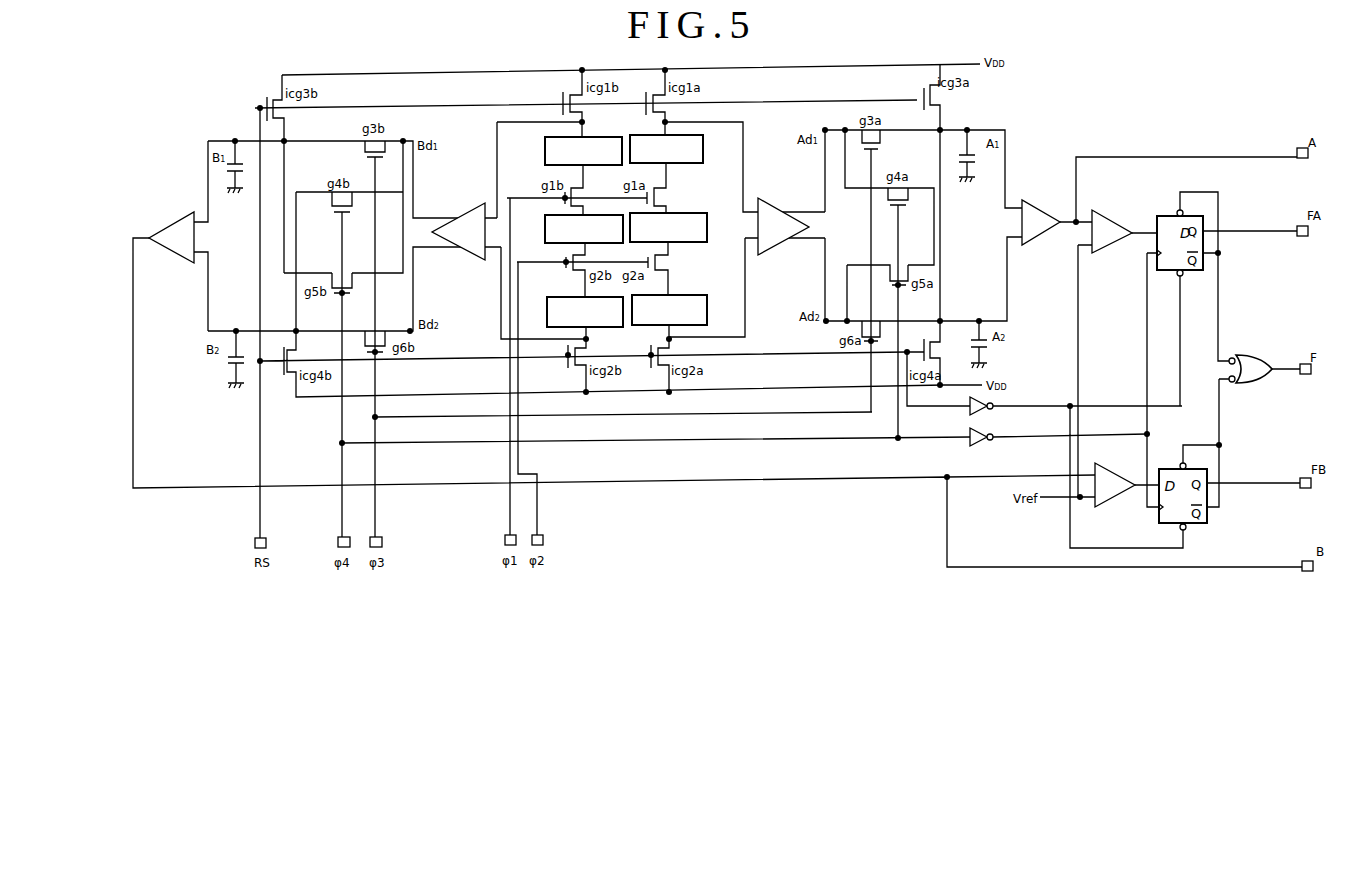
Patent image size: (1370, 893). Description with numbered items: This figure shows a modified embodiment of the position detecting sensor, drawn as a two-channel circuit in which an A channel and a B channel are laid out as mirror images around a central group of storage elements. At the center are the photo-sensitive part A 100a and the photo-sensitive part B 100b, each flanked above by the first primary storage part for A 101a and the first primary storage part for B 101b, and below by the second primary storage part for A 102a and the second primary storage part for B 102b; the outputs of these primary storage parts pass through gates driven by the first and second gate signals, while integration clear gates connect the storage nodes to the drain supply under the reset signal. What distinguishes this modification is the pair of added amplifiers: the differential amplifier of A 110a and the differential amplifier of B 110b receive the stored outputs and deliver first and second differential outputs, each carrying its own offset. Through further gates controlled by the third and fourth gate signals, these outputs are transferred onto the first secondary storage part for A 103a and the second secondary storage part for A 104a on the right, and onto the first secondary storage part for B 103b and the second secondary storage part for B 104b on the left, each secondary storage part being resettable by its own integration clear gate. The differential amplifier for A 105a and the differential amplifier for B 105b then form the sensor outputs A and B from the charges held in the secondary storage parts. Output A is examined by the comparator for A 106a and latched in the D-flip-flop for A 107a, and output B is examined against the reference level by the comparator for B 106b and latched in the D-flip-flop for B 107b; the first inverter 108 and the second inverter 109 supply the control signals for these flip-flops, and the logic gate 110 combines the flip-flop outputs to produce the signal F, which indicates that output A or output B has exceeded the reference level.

The differential amplifier for B 105b is at (179, 215).
The first secondary storage part for B 103b is at (243, 167).
The second secondary storage part for B 104b is at (225, 367).
The differential amplifier of B 110b is at (461, 211).
The first primary storage part for B 101b is at (543, 148).
The photo-sensitive part B 100b is at (545, 231).
The second primary storage part for B 102b is at (547, 314).
The first primary storage part for A 101a is at (709, 147).
The photo-sensitive part A 100a is at (710, 230).
The second primary storage part for A 102a is at (710, 313).
The differential amplifier of A 110a is at (778, 198).
The first secondary storage part for A 103a is at (962, 160).
The second secondary storage part for A 104a is at (993, 346).
The differential amplifier for A 105a is at (1042, 206).
The comparator for A 106a is at (1112, 217).
The D-flip-flop for A 107a is at (1161, 216).
The first inverter 108 is at (990, 417).
The second inverter 109 is at (974, 447).
The comparator for B 106b is at (1111, 507).
The D-flip-flop for B 107b is at (1168, 469).
The logic gate 110 is at (1249, 350).